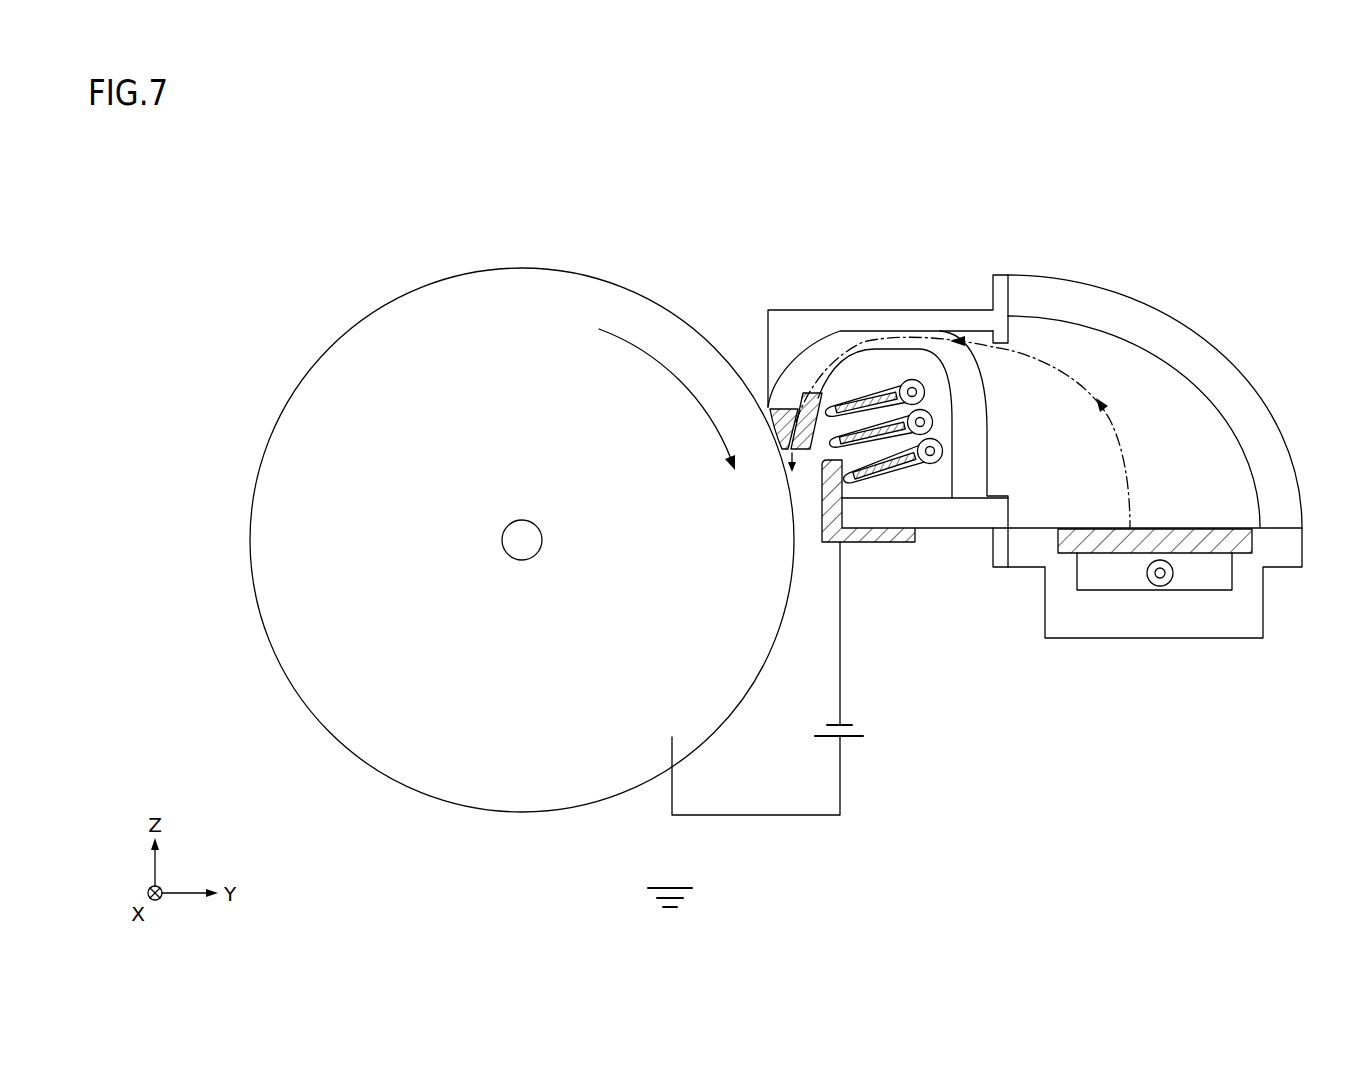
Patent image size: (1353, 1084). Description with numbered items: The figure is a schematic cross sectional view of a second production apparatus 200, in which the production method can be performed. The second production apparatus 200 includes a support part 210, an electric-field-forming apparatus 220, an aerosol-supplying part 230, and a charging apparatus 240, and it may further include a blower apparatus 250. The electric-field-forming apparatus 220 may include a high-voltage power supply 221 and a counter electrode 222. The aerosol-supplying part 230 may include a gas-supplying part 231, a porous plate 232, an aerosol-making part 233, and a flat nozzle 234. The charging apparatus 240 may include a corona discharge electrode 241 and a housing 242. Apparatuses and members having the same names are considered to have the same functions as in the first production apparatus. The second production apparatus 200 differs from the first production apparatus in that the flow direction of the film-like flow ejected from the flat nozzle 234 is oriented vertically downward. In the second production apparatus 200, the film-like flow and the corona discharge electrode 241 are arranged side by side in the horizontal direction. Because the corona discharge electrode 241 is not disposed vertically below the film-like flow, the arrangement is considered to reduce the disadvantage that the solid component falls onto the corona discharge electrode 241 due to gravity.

The second production apparatus 200 is at (256, 195).
The support part 210 is at (538, 270).
The electric-field-forming apparatus 220 is at (963, 717).
The high-voltage power supply 221 is at (852, 740).
The counter electrode 222 is at (883, 542).
The aerosol-supplying part 230 is at (1313, 162).
The gas-supplying part 231 is at (1173, 571).
The porous plate 232 is at (1162, 527).
The aerosol-making part 233 is at (1060, 287).
The flat nozzle 234 is at (778, 407).
The charging apparatus 240 is at (936, 613).
The corona discharge electrode 241 is at (886, 476).
The housing 242 is at (922, 468).
The blower apparatus 250 is at (933, 422).